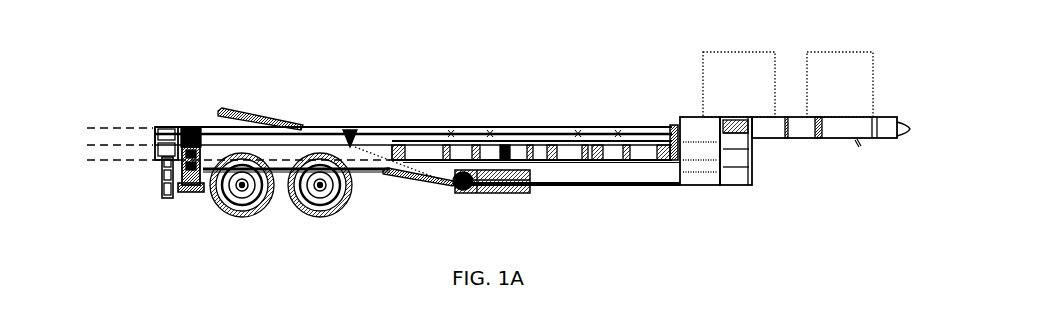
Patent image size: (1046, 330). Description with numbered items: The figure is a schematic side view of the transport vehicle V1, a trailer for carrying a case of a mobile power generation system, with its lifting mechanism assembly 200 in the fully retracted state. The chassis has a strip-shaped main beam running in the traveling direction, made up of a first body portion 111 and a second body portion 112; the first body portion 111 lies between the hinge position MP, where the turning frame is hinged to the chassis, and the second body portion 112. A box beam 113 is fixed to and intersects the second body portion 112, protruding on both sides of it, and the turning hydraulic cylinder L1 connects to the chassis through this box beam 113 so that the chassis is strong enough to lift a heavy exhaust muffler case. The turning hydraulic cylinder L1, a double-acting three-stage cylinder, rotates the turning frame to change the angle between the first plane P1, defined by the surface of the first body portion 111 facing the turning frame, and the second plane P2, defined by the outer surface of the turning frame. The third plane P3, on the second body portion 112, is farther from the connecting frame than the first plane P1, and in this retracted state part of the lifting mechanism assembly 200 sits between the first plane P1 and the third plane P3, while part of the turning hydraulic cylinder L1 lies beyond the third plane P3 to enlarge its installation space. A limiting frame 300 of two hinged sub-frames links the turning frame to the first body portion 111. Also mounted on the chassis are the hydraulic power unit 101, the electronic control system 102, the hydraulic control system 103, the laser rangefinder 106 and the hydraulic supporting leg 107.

The transport vehicle V1 is at (464, 40).
The hydraulic power unit 101 is at (848, 77).
The electronic control system 102 is at (728, 65).
The hydraulic control system 103 is at (674, 118).
The laser rangefinder 106 is at (152, 127).
The hydraulic supporting leg 107 is at (183, 193).
The first body portion 111 is at (206, 150).
The second body portion 112 is at (600, 170).
The box beam 113 is at (512, 195).
The lifting mechanism assembly 200 is at (549, 121).
The limiting frame 300 is at (267, 122).
The turning hydraulic cylinder L1 is at (437, 178).
The hinge position MP is at (160, 173).
The first plane P1 is at (108, 143).
The second plane P2 is at (108, 123).
The third plane P3 is at (231, 160).